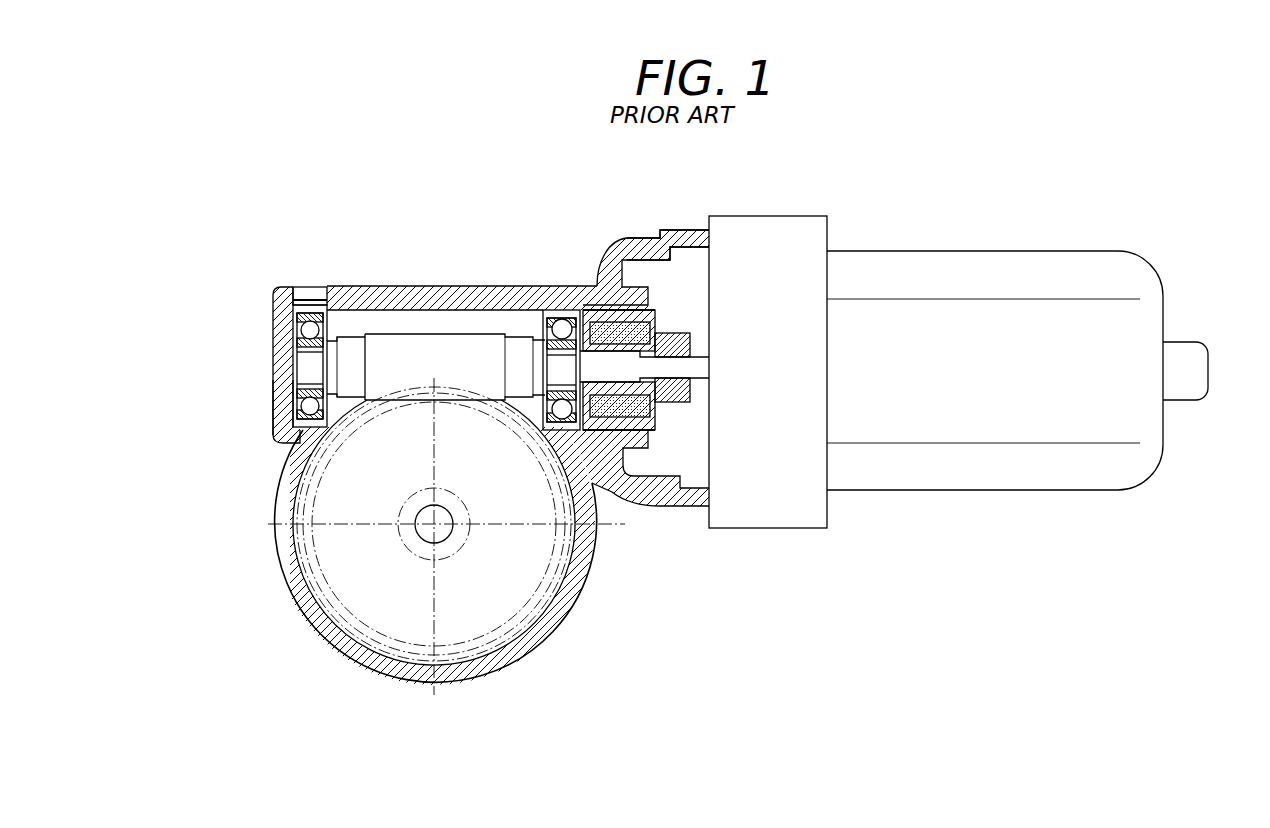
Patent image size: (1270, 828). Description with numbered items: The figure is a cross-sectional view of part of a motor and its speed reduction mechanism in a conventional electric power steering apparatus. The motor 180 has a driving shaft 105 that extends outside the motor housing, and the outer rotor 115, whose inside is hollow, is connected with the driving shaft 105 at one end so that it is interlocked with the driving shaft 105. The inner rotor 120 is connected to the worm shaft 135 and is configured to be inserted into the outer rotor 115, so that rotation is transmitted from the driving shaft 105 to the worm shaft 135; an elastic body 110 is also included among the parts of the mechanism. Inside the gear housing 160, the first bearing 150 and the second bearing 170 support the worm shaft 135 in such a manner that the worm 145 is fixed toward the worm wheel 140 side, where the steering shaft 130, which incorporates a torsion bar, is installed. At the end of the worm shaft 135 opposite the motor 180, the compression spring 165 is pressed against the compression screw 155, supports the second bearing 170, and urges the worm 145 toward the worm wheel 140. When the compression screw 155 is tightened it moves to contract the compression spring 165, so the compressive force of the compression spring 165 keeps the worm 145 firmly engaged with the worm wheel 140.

The driving shaft 105 is at (697, 360).
The elastic body 110 is at (648, 340).
The outer rotor 115 is at (608, 318).
The inner rotor 120 is at (618, 438).
The steering shaft 130 is at (417, 517).
The worm shaft 135 is at (352, 350).
The worm wheel 140 is at (553, 592).
The worm 145 is at (440, 335).
The first bearing 150 is at (562, 318).
The compression screw 155 is at (310, 287).
The gear housing 160 is at (483, 290).
The compression spring 165 is at (295, 306).
The second bearing 170 is at (297, 393).
The motor 180 is at (918, 268).